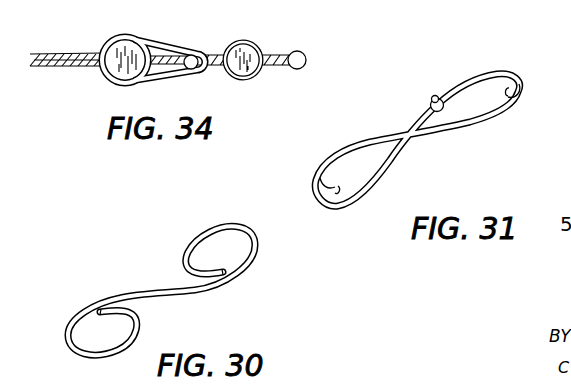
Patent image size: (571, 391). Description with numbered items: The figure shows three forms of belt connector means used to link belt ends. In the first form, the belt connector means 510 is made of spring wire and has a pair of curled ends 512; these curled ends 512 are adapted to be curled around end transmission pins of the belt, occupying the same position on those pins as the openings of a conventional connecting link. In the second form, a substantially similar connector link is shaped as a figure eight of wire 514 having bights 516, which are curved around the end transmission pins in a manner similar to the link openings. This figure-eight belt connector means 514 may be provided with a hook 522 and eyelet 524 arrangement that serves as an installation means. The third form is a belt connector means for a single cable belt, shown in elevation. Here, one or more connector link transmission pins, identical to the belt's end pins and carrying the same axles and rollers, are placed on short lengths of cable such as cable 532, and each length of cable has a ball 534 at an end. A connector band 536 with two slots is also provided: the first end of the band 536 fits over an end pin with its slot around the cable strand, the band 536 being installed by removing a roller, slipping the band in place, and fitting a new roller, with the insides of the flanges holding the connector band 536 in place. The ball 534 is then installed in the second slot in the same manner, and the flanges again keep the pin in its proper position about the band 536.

In FIG. 30, the belt connector means 510 is at (150, 288).
In FIG. 30, the curled ends 512 is at (257, 250).
In FIG. 31, the figure eight of wire 514 is at (388, 138).
In FIG. 31, the bights 516 is at (508, 92).
In FIG. 31, the hook 522 is at (437, 95).
In FIG. 31, the eyelet 524 is at (431, 102).
In FIG. 34, the cable 532 is at (277, 50).
In FIG. 34, the ball 534 is at (193, 52).
In FIG. 34, the connector band 536 is at (170, 30).